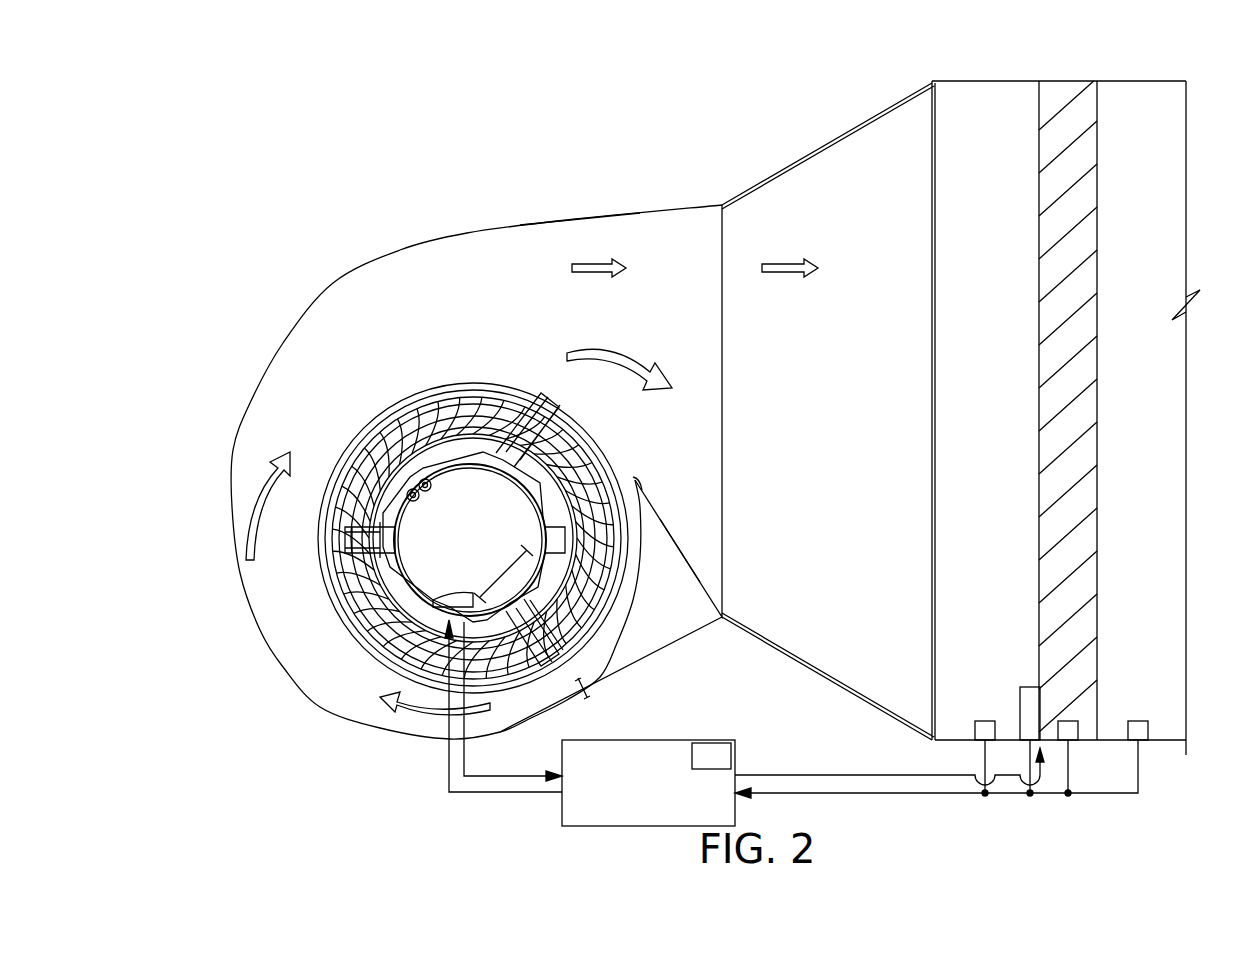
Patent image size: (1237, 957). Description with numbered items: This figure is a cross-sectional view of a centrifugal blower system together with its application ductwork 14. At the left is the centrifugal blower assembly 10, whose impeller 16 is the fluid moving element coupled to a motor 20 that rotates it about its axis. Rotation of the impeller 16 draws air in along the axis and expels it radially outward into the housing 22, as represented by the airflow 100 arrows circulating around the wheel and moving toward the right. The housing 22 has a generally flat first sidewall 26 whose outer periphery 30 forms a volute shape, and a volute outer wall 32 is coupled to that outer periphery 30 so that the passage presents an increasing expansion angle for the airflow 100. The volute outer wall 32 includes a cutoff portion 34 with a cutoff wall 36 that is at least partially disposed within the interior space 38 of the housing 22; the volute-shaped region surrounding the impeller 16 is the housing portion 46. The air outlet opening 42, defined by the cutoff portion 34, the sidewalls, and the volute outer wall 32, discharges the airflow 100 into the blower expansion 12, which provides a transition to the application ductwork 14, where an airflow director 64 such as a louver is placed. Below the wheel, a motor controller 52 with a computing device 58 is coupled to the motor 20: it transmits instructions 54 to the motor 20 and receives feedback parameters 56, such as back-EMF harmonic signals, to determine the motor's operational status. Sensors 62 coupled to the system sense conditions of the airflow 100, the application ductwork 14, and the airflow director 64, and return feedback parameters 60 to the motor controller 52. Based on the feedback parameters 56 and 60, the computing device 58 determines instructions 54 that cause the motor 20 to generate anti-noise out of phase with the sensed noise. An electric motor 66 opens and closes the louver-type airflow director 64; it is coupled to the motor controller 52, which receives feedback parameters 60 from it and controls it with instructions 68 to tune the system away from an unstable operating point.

The centrifugal blower assembly 10 is at (264, 224).
The blower expansion 12 is at (835, 138).
The application ductwork 14 is at (952, 82).
The impeller 16 is at (322, 588).
The motor 20 is at (380, 650).
The housing 22 is at (580, 210).
The first sidewall 26 is at (486, 315).
The outer periphery 30 is at (282, 665).
The volute outer wall 32 is at (619, 655).
The cutoff portion 34 is at (640, 478).
The cutoff wall 36 is at (702, 560).
The interior space 38 is at (405, 312).
The air outlet opening 42 is at (690, 332).
The housing portion 46 is at (322, 406).
The motor controller 52 is at (628, 822).
The instructions 54 is at (497, 795).
The feedback parameters 56 is at (502, 773).
The computing device 58 is at (699, 768).
The feedback parameters 60 is at (848, 793).
The sensors 62 is at (985, 764).
The airflow director 64 is at (1097, 102).
The electric motor 66 is at (1020, 700).
The instructions 68 is at (786, 779).
The airflow 100 is at (573, 252).